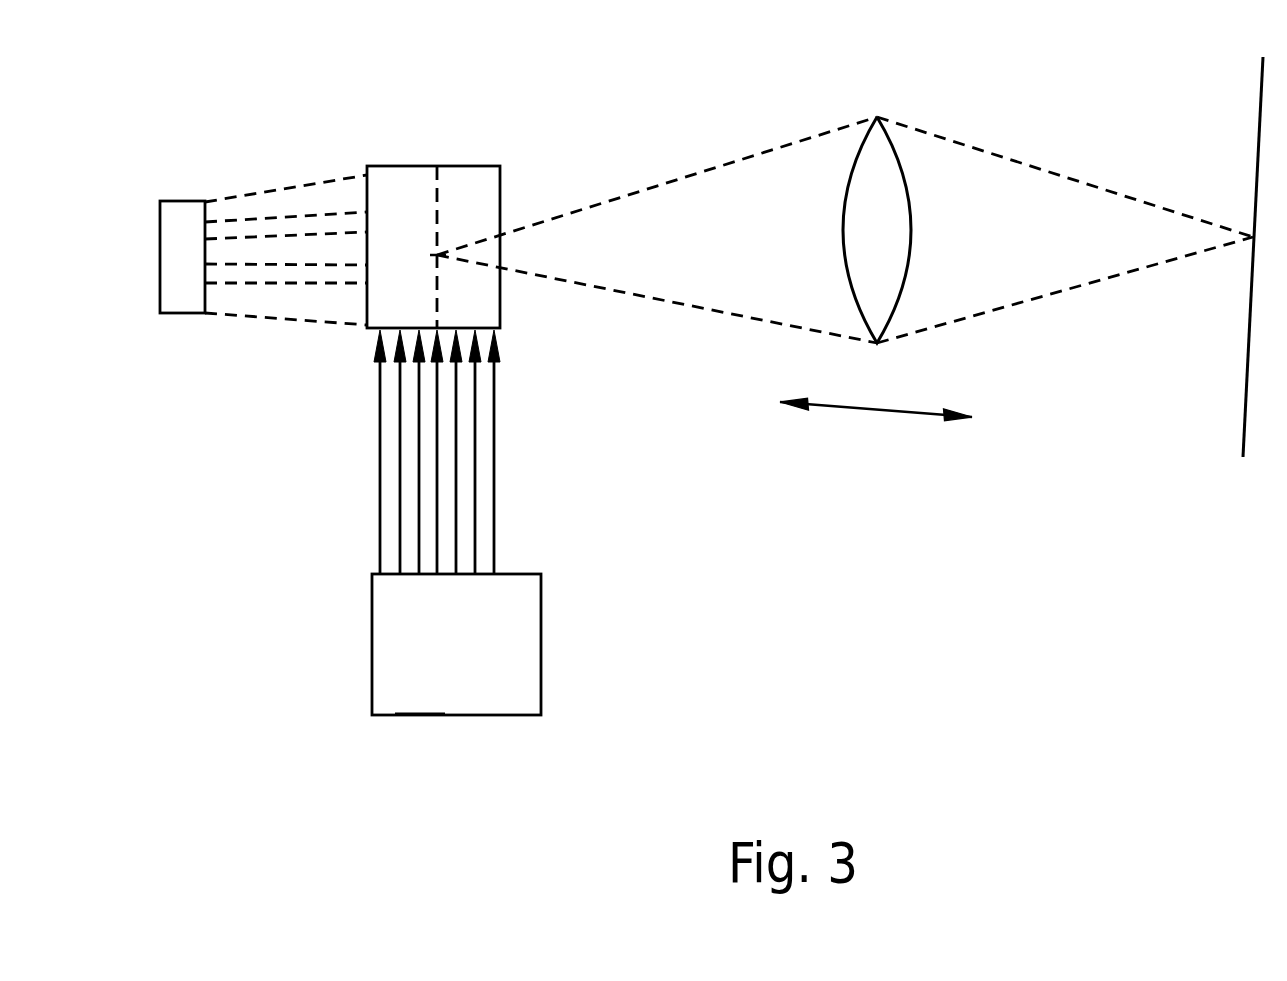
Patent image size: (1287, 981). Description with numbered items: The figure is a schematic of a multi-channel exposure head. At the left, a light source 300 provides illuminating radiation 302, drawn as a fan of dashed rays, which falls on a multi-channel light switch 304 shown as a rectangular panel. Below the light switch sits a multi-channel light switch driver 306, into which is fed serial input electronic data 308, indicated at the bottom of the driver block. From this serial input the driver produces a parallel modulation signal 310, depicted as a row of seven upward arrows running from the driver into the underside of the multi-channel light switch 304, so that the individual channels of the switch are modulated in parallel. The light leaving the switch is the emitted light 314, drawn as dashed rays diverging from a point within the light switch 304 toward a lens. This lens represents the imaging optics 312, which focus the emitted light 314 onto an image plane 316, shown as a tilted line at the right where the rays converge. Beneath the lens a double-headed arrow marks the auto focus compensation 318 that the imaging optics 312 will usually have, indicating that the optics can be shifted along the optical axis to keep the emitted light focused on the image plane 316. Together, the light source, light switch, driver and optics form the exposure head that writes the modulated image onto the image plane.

The light source 300 is at (187, 313).
The illuminating radiation 302 is at (282, 188).
The multi-channel light switch 304 is at (400, 165).
The multi-channel light switch driver 306 is at (542, 673).
The serial input electronic data 308 is at (420, 712).
The parallel modulation signal 310 is at (488, 497).
The imaging optics 312 is at (877, 117).
The emitted light 314 is at (632, 193).
The image plane 316 is at (1256, 175).
The auto focus compensation 318 is at (872, 408).